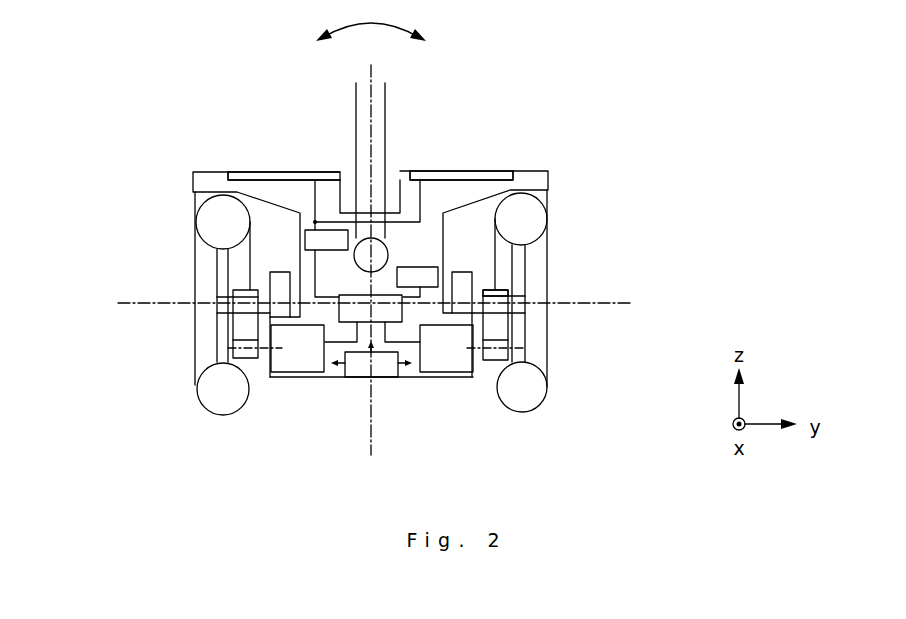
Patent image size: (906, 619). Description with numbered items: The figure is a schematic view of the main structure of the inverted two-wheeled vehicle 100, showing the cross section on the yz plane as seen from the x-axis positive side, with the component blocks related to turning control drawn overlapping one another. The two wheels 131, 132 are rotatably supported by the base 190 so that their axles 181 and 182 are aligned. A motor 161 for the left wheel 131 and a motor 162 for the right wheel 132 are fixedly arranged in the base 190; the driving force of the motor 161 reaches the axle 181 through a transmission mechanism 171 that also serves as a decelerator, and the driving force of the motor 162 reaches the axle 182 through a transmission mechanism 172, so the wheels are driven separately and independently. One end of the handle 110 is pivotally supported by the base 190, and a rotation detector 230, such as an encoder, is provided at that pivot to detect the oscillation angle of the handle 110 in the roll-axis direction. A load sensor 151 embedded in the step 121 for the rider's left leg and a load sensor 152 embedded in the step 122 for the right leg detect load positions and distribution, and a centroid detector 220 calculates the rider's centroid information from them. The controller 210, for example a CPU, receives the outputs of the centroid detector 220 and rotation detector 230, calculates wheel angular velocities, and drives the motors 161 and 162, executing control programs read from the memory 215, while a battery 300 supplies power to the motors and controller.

The inverted two-wheeled vehicle 100 is at (88, 108).
The handle 110 is at (384, 118).
The step 121 is at (540, 167).
The step 122 is at (207, 171).
The wheel 131 is at (548, 397).
The wheel 132 is at (197, 398).
The load sensor 151 is at (463, 172).
The load sensor 152 is at (288, 176).
The motor 161 is at (440, 361).
The motor 162 is at (305, 363).
The transmission mechanism 171 is at (488, 361).
The transmission mechanism 172 is at (256, 360).
The axle 181 is at (480, 297).
The axle 182 is at (262, 292).
The base 190 is at (395, 378).
The controller 210 is at (360, 296).
The memory 215 is at (425, 267).
The centroid detector 220 is at (335, 229).
The rotation detector 230 is at (388, 249).
The battery 300 is at (365, 367).